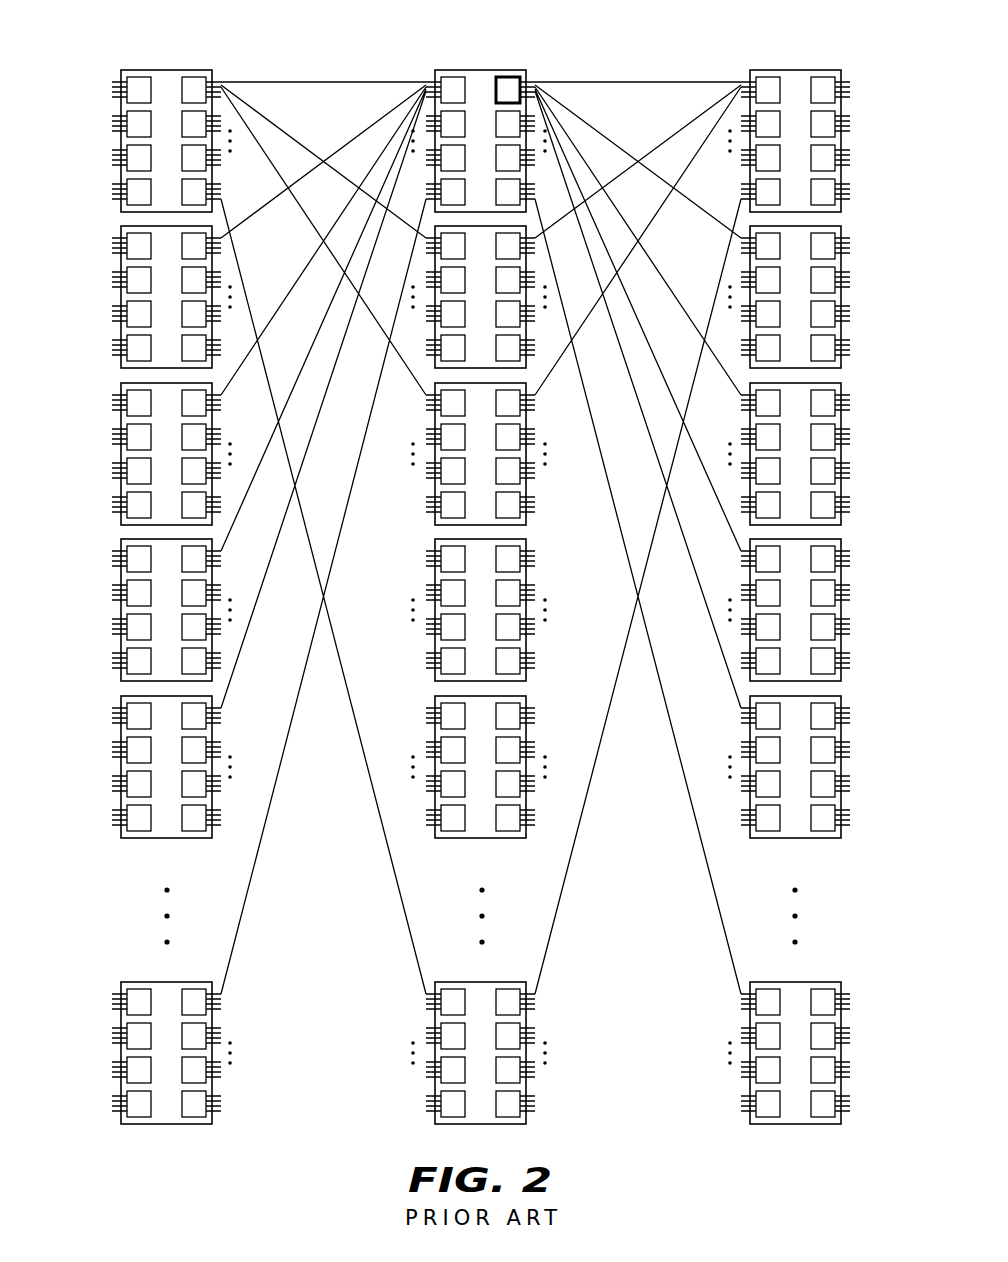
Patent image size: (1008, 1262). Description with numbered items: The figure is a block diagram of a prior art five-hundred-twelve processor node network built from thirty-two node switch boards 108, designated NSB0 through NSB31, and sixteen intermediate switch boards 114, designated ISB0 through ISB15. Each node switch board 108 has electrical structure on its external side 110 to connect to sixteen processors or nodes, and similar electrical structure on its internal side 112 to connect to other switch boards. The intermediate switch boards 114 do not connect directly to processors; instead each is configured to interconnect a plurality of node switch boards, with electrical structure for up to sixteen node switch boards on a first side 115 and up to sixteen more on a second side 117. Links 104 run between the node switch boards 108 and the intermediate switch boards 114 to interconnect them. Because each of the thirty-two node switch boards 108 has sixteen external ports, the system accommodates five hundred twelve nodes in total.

The links 104 is at (677, 132).
The node switch boards 108 is at (862, 1146).
The external side 110 is at (850, 1050).
The internal side 112 is at (741, 1018).
The intermediate switch boards 114 is at (574, 1146).
The first side 115 is at (437, 695).
The second side 117 is at (525, 695).